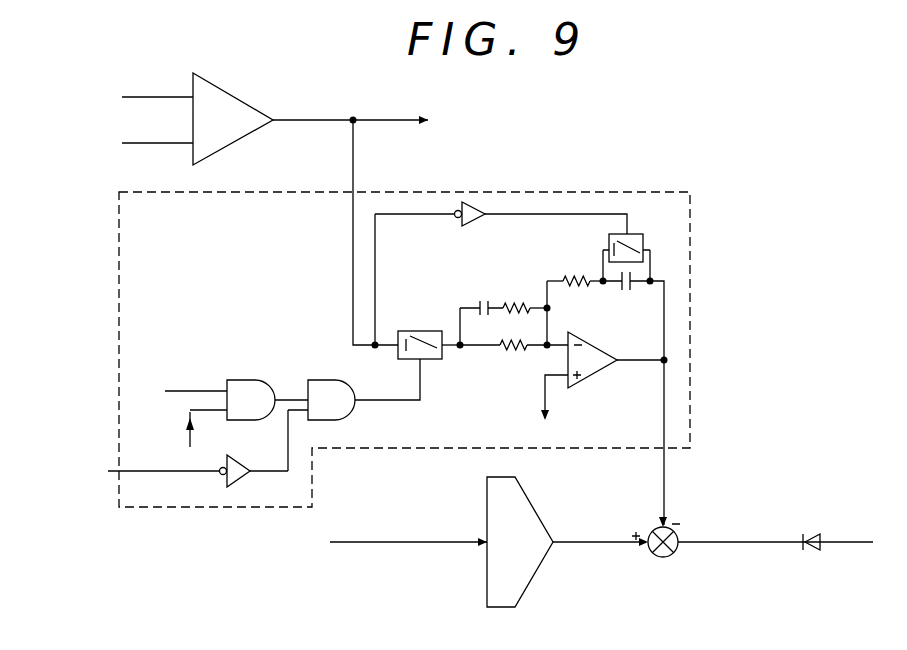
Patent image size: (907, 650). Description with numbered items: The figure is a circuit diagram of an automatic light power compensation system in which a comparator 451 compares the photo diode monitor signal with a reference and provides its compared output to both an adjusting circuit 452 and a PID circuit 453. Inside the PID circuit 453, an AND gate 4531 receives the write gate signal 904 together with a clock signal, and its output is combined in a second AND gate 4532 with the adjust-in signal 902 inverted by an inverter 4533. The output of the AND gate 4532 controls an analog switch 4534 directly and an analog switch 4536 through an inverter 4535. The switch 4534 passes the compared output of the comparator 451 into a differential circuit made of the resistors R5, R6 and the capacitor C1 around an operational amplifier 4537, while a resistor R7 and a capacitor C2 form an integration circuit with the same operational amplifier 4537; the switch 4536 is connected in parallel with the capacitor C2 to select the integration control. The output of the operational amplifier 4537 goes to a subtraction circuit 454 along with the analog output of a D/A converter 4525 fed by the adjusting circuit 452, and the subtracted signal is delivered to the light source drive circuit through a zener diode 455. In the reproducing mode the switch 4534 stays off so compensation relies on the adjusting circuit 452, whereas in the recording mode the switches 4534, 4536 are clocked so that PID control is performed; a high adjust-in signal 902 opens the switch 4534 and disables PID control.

The comparator 451 is at (228, 91).
The adjusting circuit 452 is at (380, 330).
The PID circuit 453 is at (690, 318).
The subtraction circuit 454 is at (661, 559).
The zener diode 455 is at (814, 529).
The adjust-in signal 902 is at (178, 477).
The write gate signal 904 is at (214, 391).
The D/A converter 4525 is at (535, 506).
The AND gate 4531 is at (247, 380).
The AND gate 4532 is at (323, 380).
The inverter 4533 is at (253, 453).
The analog switch 4534 is at (422, 331).
The inverter 4535 is at (471, 204).
The analog switch 4536 is at (643, 240).
The operational amplifier 4537 is at (596, 378).
The resistor R5 is at (513, 333).
The resistor R6 is at (525, 297).
The resistor R7 is at (575, 299).
The capacitor C1 is at (481, 313).
The capacitor C2 is at (633, 316).